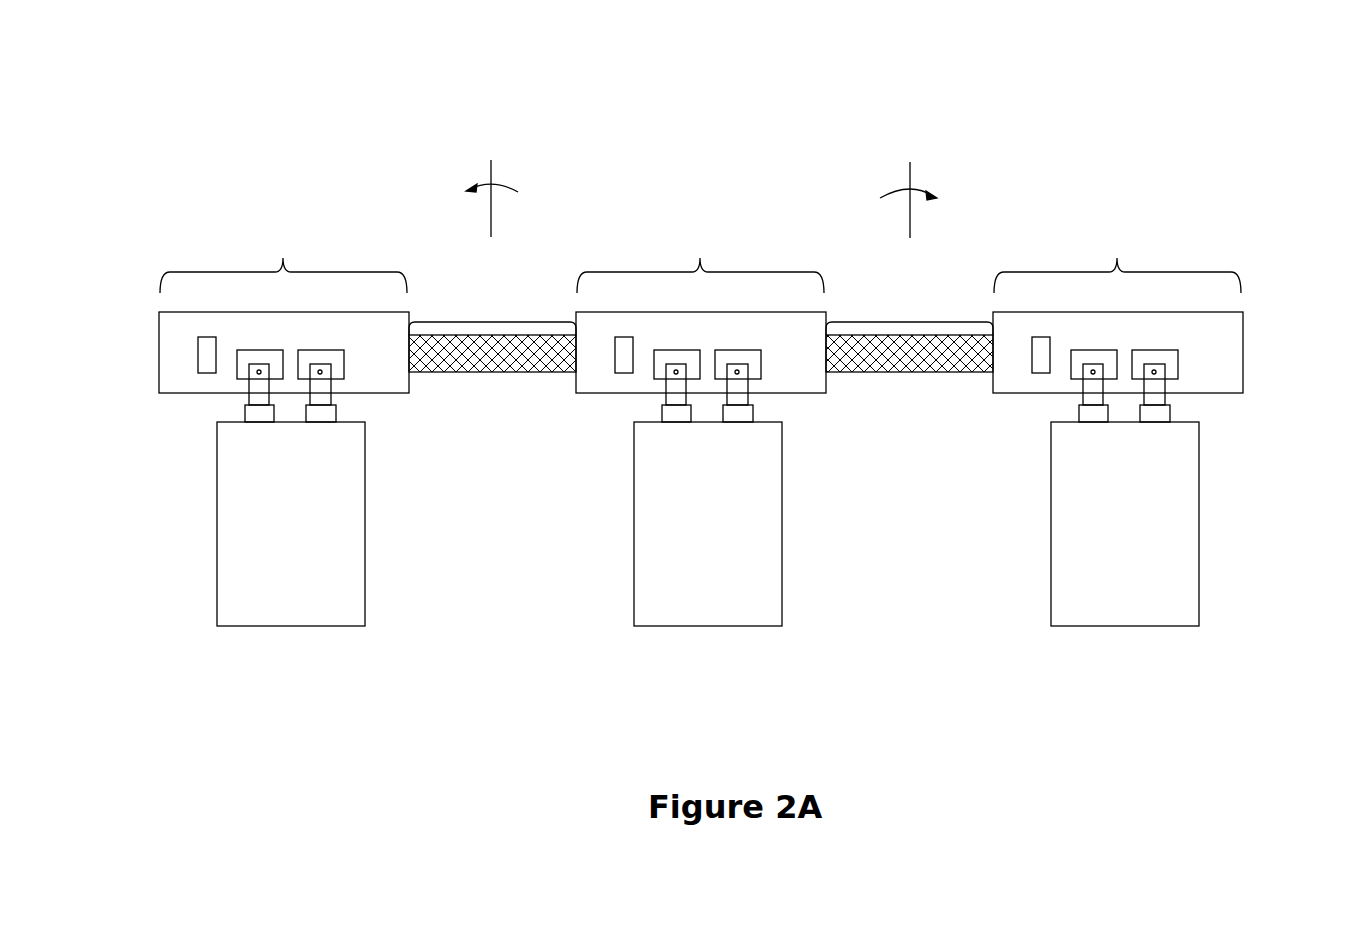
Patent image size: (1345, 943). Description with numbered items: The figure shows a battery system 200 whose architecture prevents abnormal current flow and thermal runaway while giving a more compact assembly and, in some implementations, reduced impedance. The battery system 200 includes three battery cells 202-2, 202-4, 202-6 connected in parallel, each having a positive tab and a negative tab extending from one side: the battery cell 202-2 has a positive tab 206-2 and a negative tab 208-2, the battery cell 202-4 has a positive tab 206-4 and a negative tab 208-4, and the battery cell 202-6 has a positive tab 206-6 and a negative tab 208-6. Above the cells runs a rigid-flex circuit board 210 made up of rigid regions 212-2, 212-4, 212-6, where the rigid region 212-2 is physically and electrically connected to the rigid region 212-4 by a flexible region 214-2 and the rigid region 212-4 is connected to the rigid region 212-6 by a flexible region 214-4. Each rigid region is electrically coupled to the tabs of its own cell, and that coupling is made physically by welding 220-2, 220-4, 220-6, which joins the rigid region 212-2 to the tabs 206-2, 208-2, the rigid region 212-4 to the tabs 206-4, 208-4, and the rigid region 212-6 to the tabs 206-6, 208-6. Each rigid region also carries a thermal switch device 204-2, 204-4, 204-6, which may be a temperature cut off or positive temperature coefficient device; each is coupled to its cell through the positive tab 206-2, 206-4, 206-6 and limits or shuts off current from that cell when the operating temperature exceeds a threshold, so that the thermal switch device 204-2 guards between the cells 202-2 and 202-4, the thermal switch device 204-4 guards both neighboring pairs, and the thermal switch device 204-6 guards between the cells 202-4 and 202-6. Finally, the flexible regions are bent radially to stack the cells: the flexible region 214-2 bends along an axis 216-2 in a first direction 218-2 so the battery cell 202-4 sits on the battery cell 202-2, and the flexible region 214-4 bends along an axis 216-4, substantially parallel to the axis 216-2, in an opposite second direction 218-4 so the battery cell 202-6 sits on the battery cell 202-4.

The battery system 200 is at (241, 110).
The battery cell 202-2 is at (307, 626).
The battery cell 202-4 is at (732, 626).
The battery cell 202-6 is at (1141, 626).
The thermal switch device 204-2 is at (198, 352).
The thermal switch device 204-4 is at (614, 353).
The thermal switch device 204-6 is at (1031, 353).
The positive tab 206-2 is at (249, 382).
The positive tab 206-4 is at (666, 383).
The positive tab 206-6 is at (1083, 383).
The negative tab 208-2 is at (331, 385).
The negative tab 208-4 is at (748, 385).
The negative tab 208-6 is at (1165, 385).
The rigid-flex circuit board 210 is at (1242, 355).
The rigid region 212-2 is at (284, 310).
The rigid region 212-4 is at (701, 310).
The rigid region 212-6 is at (1118, 310).
The flexible region 214-2 is at (486, 322).
The flexible region 214-4 is at (903, 322).
The axis 216-2 is at (492, 169).
The axis 216-4 is at (911, 172).
The first direction 218-2 is at (532, 198).
The second direction 218-4 is at (948, 200).
The welding 220-2 is at (323, 357).
The welding 220-4 is at (740, 357).
The welding 220-6 is at (1157, 357).